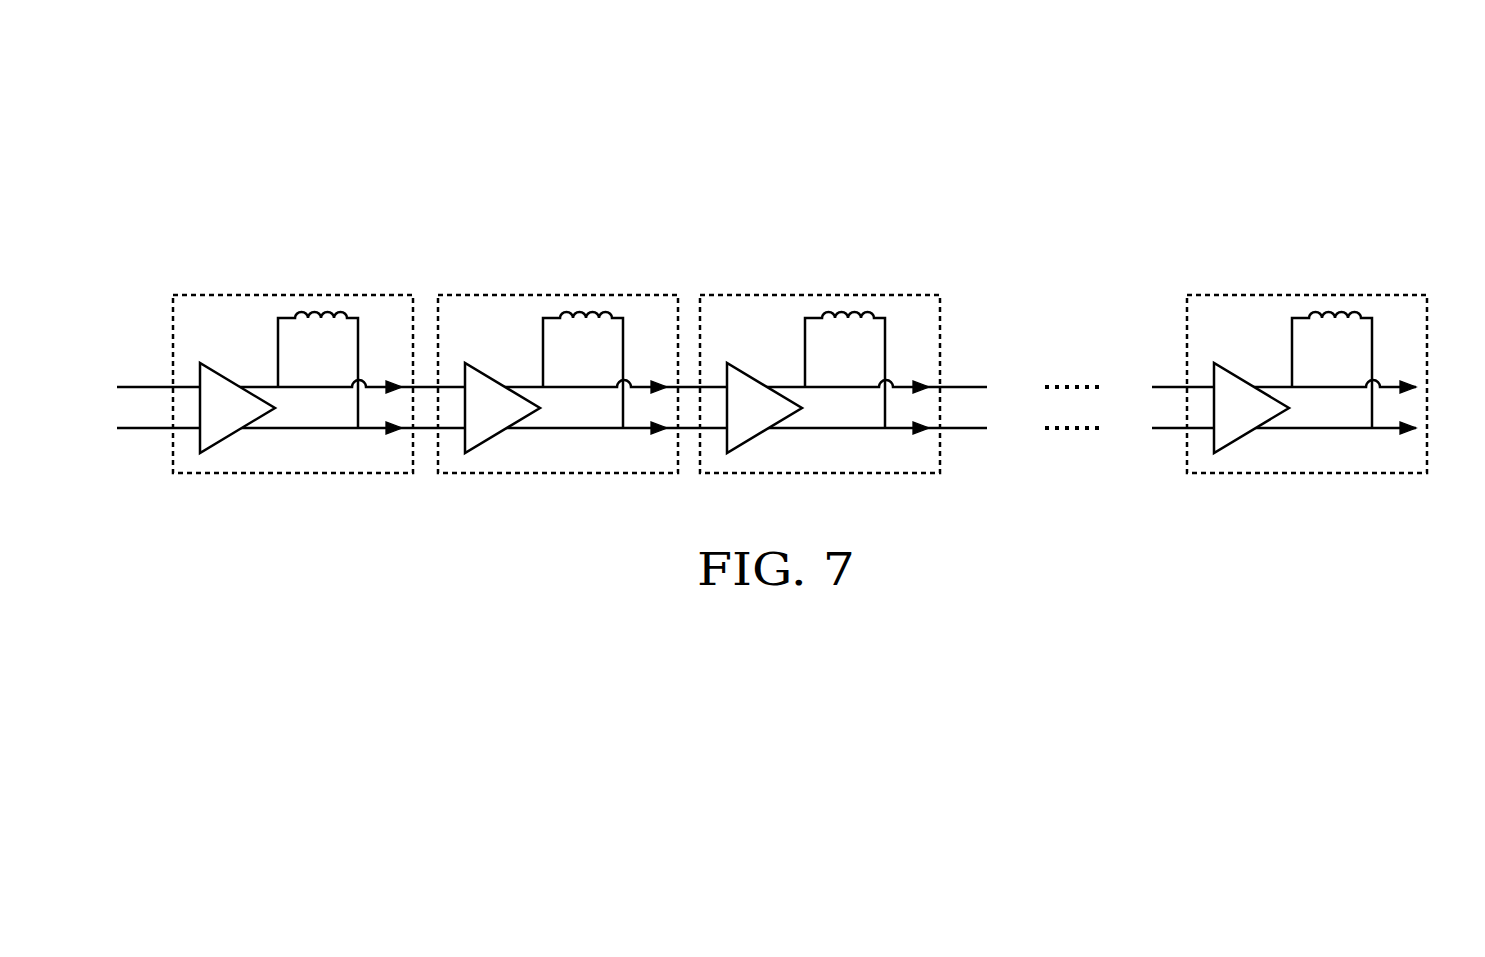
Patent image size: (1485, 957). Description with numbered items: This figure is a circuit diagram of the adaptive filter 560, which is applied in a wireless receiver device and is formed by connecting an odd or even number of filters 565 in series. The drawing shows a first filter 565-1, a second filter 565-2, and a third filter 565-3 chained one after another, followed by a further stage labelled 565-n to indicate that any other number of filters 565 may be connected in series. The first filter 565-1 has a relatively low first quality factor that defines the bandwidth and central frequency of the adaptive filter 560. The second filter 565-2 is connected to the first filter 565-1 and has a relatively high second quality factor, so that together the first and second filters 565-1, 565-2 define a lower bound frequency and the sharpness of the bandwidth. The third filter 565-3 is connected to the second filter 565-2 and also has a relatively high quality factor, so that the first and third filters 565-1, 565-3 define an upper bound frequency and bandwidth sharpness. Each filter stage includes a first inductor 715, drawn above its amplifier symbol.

The adaptive filter 560 is at (312, 85).
The filter 565 is at (772, 333).
The first filter 565-1 is at (298, 294).
The second filter 565-2 is at (563, 294).
The third filter 565-3 is at (828, 294).
The n-th amplifier stage 565-n is at (1298, 294).
The first inductor 715 is at (305, 319).